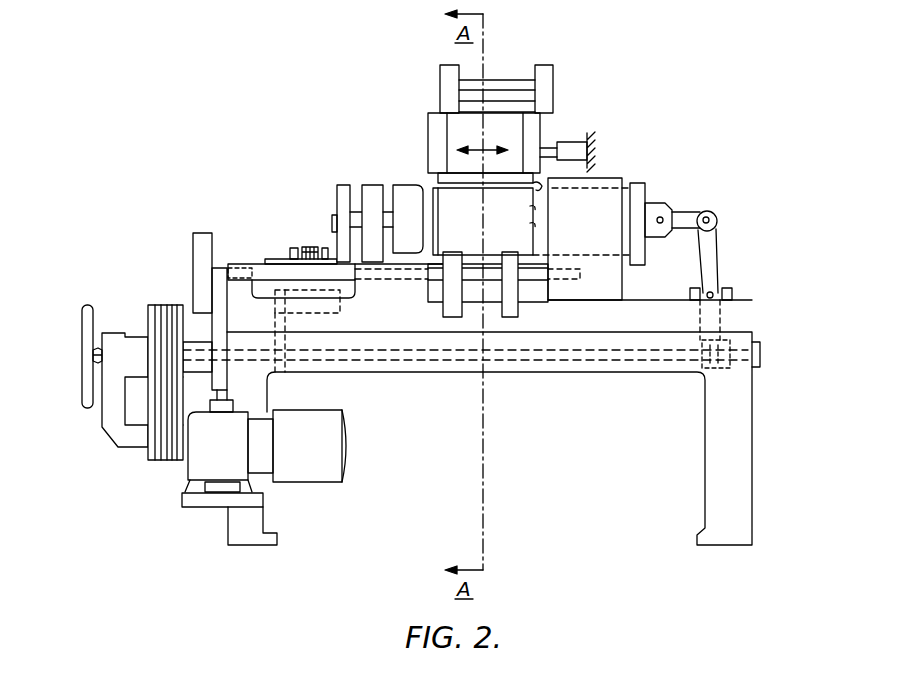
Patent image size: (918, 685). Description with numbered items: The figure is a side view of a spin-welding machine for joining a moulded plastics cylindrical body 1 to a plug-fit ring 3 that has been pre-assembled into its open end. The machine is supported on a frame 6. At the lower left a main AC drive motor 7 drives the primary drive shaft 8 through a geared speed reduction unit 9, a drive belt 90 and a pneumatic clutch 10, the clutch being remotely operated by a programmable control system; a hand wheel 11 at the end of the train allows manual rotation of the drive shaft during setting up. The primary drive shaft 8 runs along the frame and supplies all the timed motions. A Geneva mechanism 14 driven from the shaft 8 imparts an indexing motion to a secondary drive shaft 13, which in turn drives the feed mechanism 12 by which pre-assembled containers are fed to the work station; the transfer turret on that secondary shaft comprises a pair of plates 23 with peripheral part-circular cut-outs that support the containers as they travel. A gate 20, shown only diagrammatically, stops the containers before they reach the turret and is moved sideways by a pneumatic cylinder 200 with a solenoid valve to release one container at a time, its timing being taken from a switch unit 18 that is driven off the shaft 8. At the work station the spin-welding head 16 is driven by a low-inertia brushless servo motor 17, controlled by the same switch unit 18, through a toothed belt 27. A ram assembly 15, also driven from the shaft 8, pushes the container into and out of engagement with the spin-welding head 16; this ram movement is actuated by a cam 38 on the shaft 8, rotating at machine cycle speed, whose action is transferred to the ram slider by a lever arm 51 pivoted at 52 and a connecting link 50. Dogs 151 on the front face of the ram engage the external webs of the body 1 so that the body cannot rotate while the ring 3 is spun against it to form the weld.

The cylindrical body 1 is at (513, 218).
The ring 3 is at (435, 188).
The frame 6 is at (708, 452).
The main AC drive motor 7 is at (332, 468).
The primary drive shaft 8 is at (366, 360).
The geared speed reduction unit 9 is at (210, 462).
The pneumatic clutch 10 is at (146, 325).
The hand wheel 11 is at (86, 305).
The feed mechanism 12 is at (552, 63).
The secondary drive shaft 13 is at (409, 292).
The Geneva mechanism 14 is at (186, 263).
The ram assembly 15 is at (636, 176).
The spin-welding head 16 is at (400, 166).
The servo motor 17 is at (236, 258).
The switch unit 18 is at (342, 299).
The gate 20 is at (556, 126).
The plates 23 is at (507, 256).
The toothed belt 27 is at (340, 192).
The cam 38 is at (703, 366).
The connecting link 50 is at (681, 205).
The lever arm 51 is at (710, 252).
The pivot 52 is at (713, 292).
The drive belt 90 is at (166, 306).
The dogs 151 is at (537, 228).
The pneumatic cylinder 200 is at (573, 143).